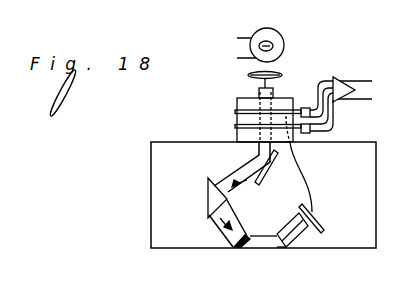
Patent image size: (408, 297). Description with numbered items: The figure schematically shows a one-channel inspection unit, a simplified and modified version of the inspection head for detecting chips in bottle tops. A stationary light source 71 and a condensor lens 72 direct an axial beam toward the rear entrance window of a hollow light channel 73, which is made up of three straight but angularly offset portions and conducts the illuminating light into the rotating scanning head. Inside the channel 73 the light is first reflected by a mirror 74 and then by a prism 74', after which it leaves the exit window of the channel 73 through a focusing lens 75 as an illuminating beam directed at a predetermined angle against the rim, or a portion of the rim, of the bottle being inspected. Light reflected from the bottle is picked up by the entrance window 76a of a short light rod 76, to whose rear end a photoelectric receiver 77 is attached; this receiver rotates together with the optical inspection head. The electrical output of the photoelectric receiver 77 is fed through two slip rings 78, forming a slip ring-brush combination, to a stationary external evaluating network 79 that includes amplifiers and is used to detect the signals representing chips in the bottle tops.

The light source 71 is at (282, 36).
The condensor lens 72 is at (277, 72).
The hollow light channel 73 is at (259, 128).
The mirror 74 is at (296, 167).
The prism 74' is at (193, 198).
The focusing lens 75 is at (241, 249).
The short light rod 76 is at (292, 228).
The entrance window 76a is at (277, 249).
The photoelectric receiver 77 is at (316, 220).
The slip rings 78 is at (306, 108).
The external evaluating network 79 is at (340, 79).